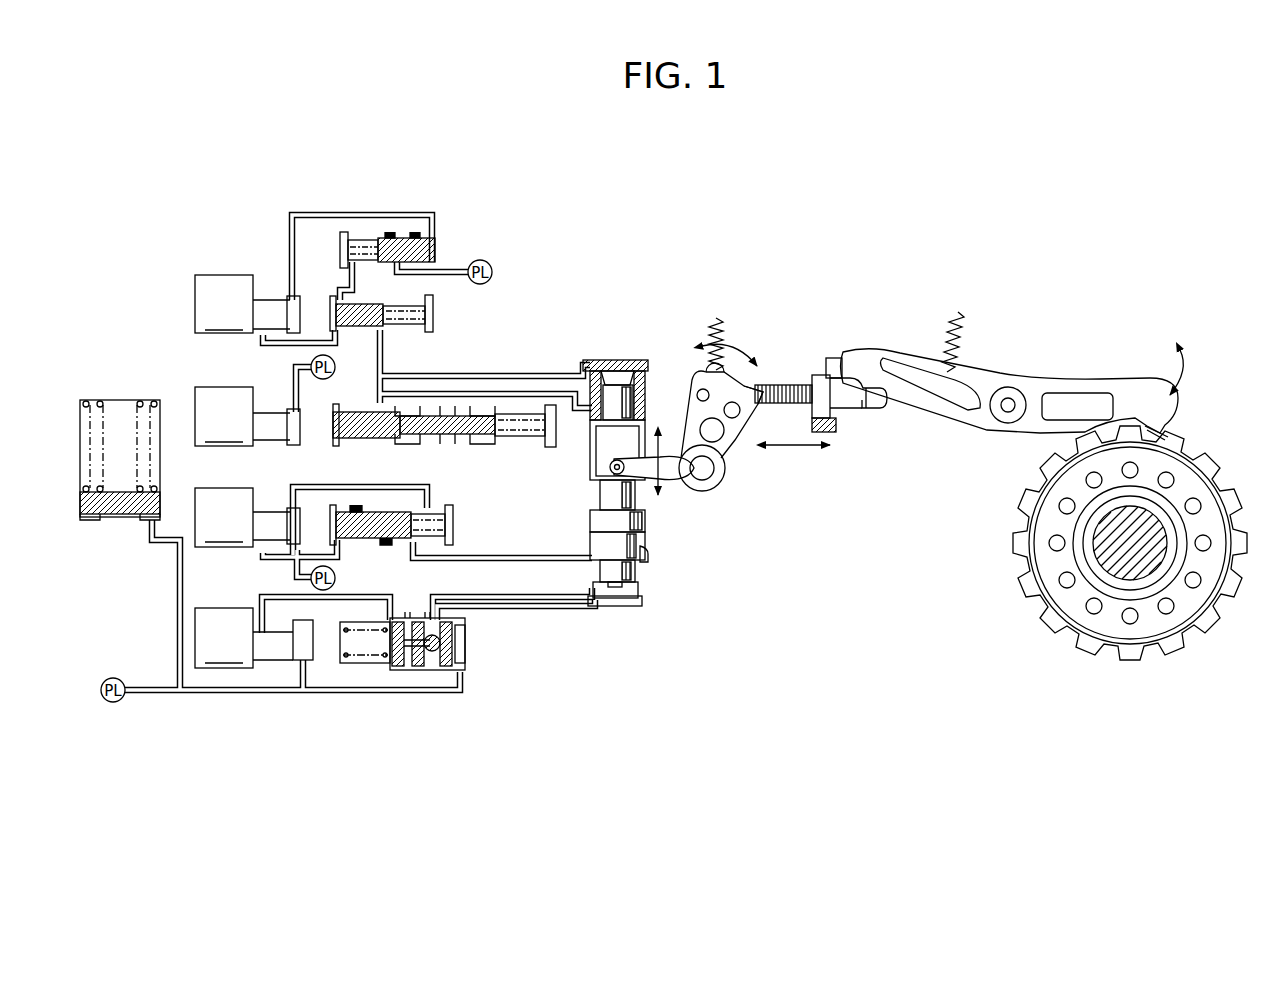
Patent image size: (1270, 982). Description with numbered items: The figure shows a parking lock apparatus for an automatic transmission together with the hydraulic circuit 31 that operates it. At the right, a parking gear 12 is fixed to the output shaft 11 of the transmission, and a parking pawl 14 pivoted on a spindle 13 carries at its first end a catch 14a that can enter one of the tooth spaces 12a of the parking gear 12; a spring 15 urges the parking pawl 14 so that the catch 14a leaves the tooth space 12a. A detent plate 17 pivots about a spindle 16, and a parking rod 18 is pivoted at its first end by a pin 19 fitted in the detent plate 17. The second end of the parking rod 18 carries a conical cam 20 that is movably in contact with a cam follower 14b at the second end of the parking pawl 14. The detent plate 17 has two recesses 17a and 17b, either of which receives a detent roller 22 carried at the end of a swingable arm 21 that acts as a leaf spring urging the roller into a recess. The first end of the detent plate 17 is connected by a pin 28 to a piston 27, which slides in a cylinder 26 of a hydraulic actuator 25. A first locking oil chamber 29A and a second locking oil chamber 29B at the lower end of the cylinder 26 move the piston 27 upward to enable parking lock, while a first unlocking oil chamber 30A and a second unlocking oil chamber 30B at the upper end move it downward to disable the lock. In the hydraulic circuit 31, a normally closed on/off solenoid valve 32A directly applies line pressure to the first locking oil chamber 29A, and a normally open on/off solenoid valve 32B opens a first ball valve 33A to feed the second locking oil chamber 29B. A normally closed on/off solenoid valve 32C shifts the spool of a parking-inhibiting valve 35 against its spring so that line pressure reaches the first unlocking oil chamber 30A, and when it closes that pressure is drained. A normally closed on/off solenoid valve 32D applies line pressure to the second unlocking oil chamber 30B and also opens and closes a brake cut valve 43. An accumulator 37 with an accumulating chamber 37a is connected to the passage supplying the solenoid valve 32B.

The output shaft 11 is at (1125, 545).
The parking gear 12 is at (1012, 511).
The tooth spaces 12a is at (1030, 490).
The spindle 13 is at (1010, 403).
The parking pawl 14 is at (1100, 378).
The catch 14a is at (1166, 434).
The cam follower 14b is at (842, 412).
The spring 15 is at (948, 330).
The spindle 16 is at (708, 470).
The detent plate 17 is at (728, 452).
The recess 17a is at (761, 385).
The recess 17b is at (711, 369).
The parking rod 18 is at (790, 386).
The pin 19 is at (700, 392).
The conical cam 20 is at (834, 388).
The swingable arm 21 is at (718, 320).
The detent roller 22 is at (748, 372).
The hydraulic actuator 25 is at (675, 633).
The cylinder 26 is at (648, 558).
The piston 27 is at (632, 522).
The pin 28 is at (612, 466).
The first locking oil chamber 29A is at (596, 545).
The second locking oil chamber 29B is at (620, 605).
The first unlocking oil chamber 30A is at (608, 358).
The second unlocking oil chamber 30B is at (592, 406).
The hydraulic circuit 31 is at (140, 240).
The on/off solenoid valve 32A is at (324, 517).
The on/off solenoid valve 32B is at (254, 638).
The on/off solenoid valve 32C is at (315, 282).
The on/off solenoid valve 32D is at (247, 416).
The first ball valve 33A is at (478, 648).
The parking-inhibiting valve 35 is at (436, 313).
The accumulator 37 is at (117, 390).
The accumulating chamber 37a is at (88, 522).
The brake cut valve 43 is at (441, 444).